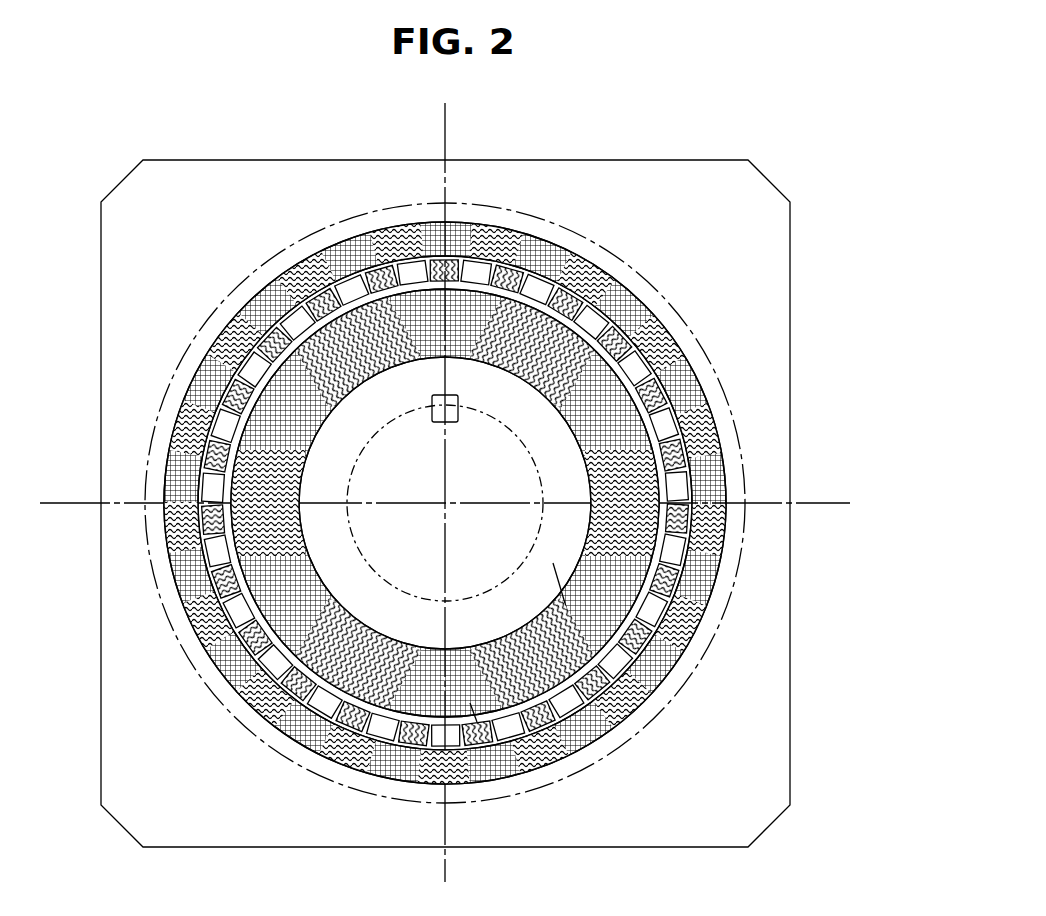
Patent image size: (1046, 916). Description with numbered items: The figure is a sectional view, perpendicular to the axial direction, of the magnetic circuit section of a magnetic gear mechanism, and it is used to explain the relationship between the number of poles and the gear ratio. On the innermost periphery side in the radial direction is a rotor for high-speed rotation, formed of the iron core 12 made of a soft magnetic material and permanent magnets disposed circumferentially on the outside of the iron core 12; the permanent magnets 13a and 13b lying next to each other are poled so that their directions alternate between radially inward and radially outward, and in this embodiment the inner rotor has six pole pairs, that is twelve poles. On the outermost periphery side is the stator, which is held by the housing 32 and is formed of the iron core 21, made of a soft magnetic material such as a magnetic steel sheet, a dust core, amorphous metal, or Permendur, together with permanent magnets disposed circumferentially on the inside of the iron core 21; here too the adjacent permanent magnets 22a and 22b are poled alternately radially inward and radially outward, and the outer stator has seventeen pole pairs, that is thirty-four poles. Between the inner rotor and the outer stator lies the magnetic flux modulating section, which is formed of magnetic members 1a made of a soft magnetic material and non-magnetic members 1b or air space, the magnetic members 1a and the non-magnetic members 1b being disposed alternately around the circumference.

The housing 32 is at (272, 197).
The iron core 21 is at (542, 233).
The magnetic members 1a is at (277, 282).
The non-magnetic members 1b is at (213, 340).
The permanent magnet 22a is at (610, 272).
The permanent magnet 22b is at (645, 312).
The iron core 12 is at (660, 677).
The permanent magnet 13a is at (600, 737).
The permanent magnet 13b is at (517, 760).